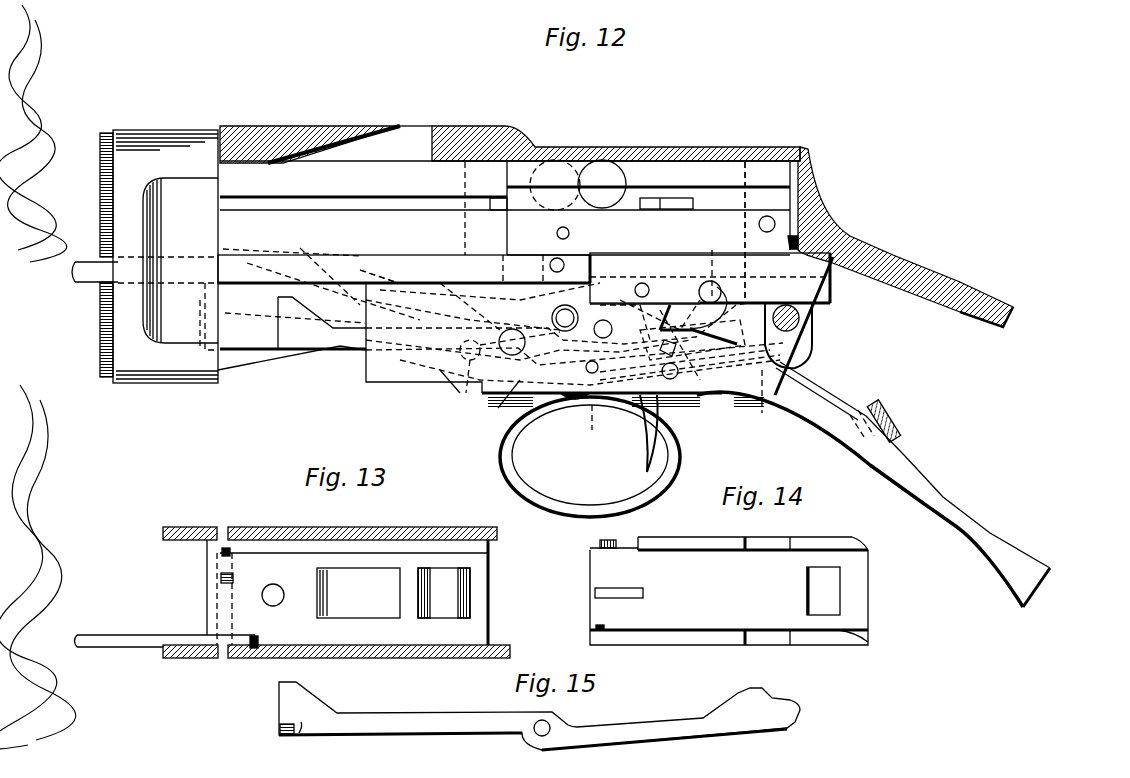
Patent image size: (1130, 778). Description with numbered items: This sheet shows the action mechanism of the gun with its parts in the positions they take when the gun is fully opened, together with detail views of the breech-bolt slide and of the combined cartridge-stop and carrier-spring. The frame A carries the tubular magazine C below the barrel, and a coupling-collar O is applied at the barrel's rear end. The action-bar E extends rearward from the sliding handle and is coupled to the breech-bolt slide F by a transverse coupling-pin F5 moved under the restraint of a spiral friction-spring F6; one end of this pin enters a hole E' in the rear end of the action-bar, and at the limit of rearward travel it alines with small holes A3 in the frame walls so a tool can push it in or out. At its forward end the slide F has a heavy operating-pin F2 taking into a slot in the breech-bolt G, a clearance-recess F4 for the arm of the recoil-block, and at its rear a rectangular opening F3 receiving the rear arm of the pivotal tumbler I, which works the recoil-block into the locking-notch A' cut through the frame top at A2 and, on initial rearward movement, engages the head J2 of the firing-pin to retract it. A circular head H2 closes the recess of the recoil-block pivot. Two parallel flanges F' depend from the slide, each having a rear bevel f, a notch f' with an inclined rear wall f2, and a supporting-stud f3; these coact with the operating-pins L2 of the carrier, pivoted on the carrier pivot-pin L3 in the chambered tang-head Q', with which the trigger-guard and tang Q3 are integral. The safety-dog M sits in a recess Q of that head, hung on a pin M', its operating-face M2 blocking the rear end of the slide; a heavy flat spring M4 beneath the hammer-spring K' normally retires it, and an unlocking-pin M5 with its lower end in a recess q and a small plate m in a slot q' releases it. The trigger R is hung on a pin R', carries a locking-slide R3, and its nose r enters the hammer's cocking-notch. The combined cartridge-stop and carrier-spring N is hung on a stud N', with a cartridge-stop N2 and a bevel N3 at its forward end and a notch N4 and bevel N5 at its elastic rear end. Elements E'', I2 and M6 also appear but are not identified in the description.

In FIG. 12, the frame A is at (165, 256).
In FIG. 13, the frame A is at (336, 580).
In FIG. 12, the locking-notch A' is at (310, 130).
In FIG. 12, the cut through top of frame A2 is at (410, 126).
In FIG. 13, the cut through top of frame A2 is at (215, 658).
In FIG. 13, the small holes A3 is at (223, 527).
In FIG. 12, the coupling-collar O is at (100, 165).
In FIG. 12, the tubular magazine C is at (110, 330).
In FIG. 12, the action-bar E is at (319, 269).
In FIG. 13, the action-bar E is at (165, 629).
In FIG. 12, the hole E' is at (574, 248).
In FIG. 13, the bolt stop E'' is at (266, 635).
In FIG. 12, the breech-bolt slide F is at (710, 278).
In FIG. 13, the breech-bolt slide F is at (298, 569).
In FIG. 14, the breech-bolt slide F is at (729, 596).
In FIG. 14, the parallel flanges F' is at (729, 590).
In FIG. 13, the operating-pin F2 is at (284, 596).
In FIG. 13, the rectangular opening F3 is at (444, 593).
In FIG. 14, the rectangular opening F3 is at (823, 591).
In FIG. 13, the clearance-recess F4 is at (358, 593).
In FIG. 12, the coupling-pin F5 is at (555, 260).
In FIG. 13, the coupling-pin F5 is at (218, 601).
In FIG. 14, the coupling-pin F5 is at (612, 542).
In FIG. 13, the spiral friction-spring F6 is at (221, 578).
In FIG. 12, the bevels f is at (703, 278).
In FIG. 14, the bevels f is at (875, 584).
In FIG. 14, the notch f' is at (758, 578).
In FIG. 12, the inclined rear wall f2 is at (725, 301).
In FIG. 14, the inclined rear wall f2 is at (791, 542).
In FIG. 14, the supporting-stud f3 is at (600, 626).
In FIG. 12, the breech-bolt G is at (648, 235).
In FIG. 12, the circular head H2 is at (578, 185).
In FIG. 12, the operating-tumbler I is at (292, 358).
In FIG. 12, the pin I2 is at (759, 224).
In FIG. 12, the head of firing-pin J2 is at (826, 205).
In FIG. 12, the hammer-spring K' is at (814, 388).
In FIG. 12, the operating-pins L2 is at (724, 231).
In FIG. 12, the carrier pivot-pin L3 is at (643, 283).
In FIG. 12, the safety-dog M is at (573, 346).
In FIG. 12, the stud or pin M' is at (582, 320).
In FIG. 12, the operating-face M2 is at (492, 282).
In FIG. 12, the heavy safety-dog spring M4 is at (771, 398).
In FIG. 12, the unlocking-pin M5 is at (710, 398).
In FIG. 12, the lock frame pivot M6 is at (528, 341).
In FIG. 12, the small plate m is at (598, 367).
In FIG. 12, the combined cartridge-stop and carrier-spring N is at (501, 331).
In FIG. 15, the combined cartridge-stop and carrier-spring N is at (539, 716).
In FIG. 12, the stud N' is at (450, 392).
In FIG. 15, the cartridge-stop N2 is at (278, 722).
In FIG. 12, the bevel N3 is at (272, 318).
In FIG. 15, the bevel N3 is at (322, 708).
In FIG. 12, the notch N4 is at (773, 318).
In FIG. 15, the notch N4 is at (773, 700).
In FIG. 15, the bevel N5 is at (738, 697).
In FIG. 12, the recess Q is at (503, 347).
In FIG. 12, the tang-block Q' is at (788, 336).
In FIG. 12, the tang Q3 is at (896, 470).
In FIG. 12, the recess q is at (690, 365).
In FIG. 12, the rectangular slot q' is at (695, 340).
In FIG. 12, the trigger R is at (634, 433).
In FIG. 12, the trigger pin R' is at (585, 423).
In FIG. 12, the locking-slide R3 is at (565, 400).
In FIG. 12, the trigger nose r is at (495, 410).